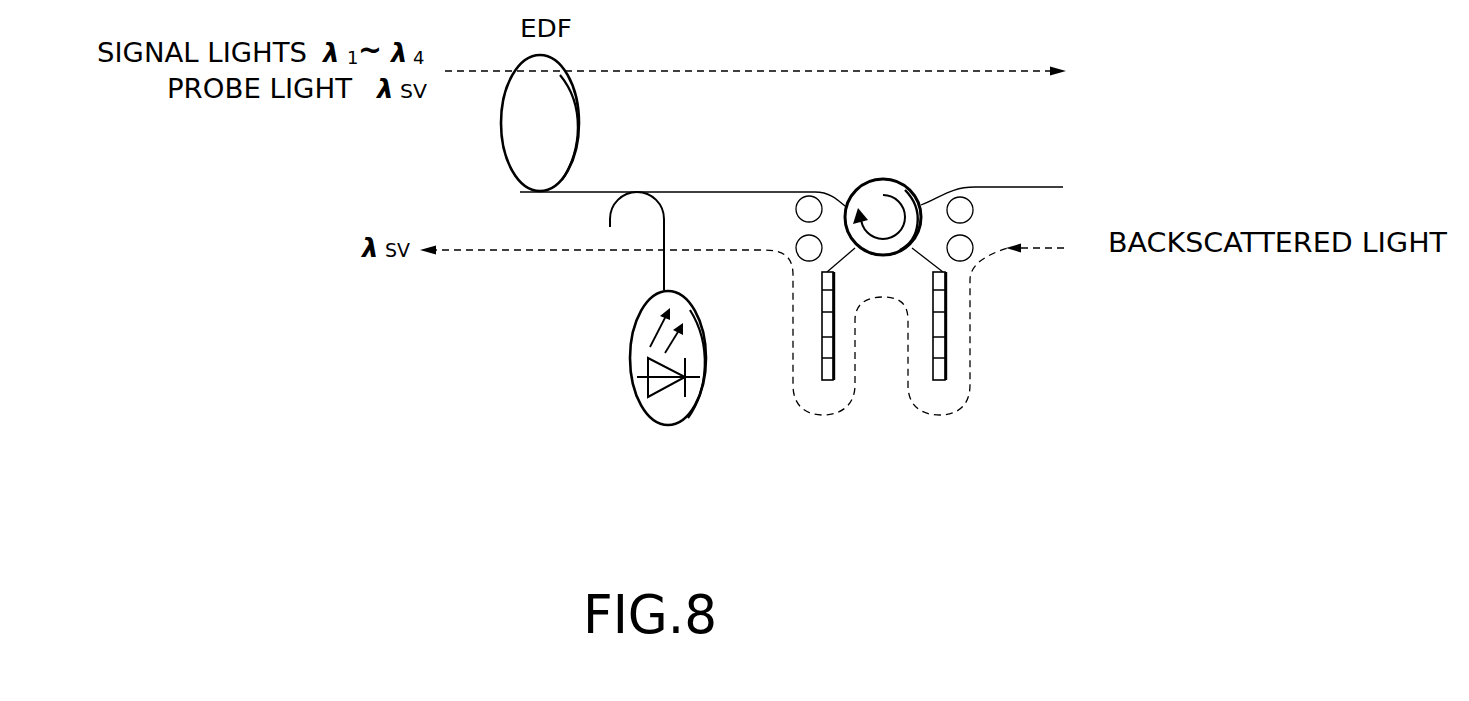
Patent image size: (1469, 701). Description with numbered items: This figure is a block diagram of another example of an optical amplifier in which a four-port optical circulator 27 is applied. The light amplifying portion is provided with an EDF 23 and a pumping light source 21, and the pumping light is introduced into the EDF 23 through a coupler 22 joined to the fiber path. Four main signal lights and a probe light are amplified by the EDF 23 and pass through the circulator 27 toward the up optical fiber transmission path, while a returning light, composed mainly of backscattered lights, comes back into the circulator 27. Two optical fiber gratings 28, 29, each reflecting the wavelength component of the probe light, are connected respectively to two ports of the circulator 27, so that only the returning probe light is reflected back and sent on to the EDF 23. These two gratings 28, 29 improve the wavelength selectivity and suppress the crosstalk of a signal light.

The pumping light source 21 is at (628, 367).
The optical coupler 22 is at (608, 210).
The EDF 23 is at (558, 60).
The 4-port optical circulator 27 is at (921, 228).
The optical fiber grating 28 is at (947, 343).
The optical fiber grating 29 is at (822, 347).